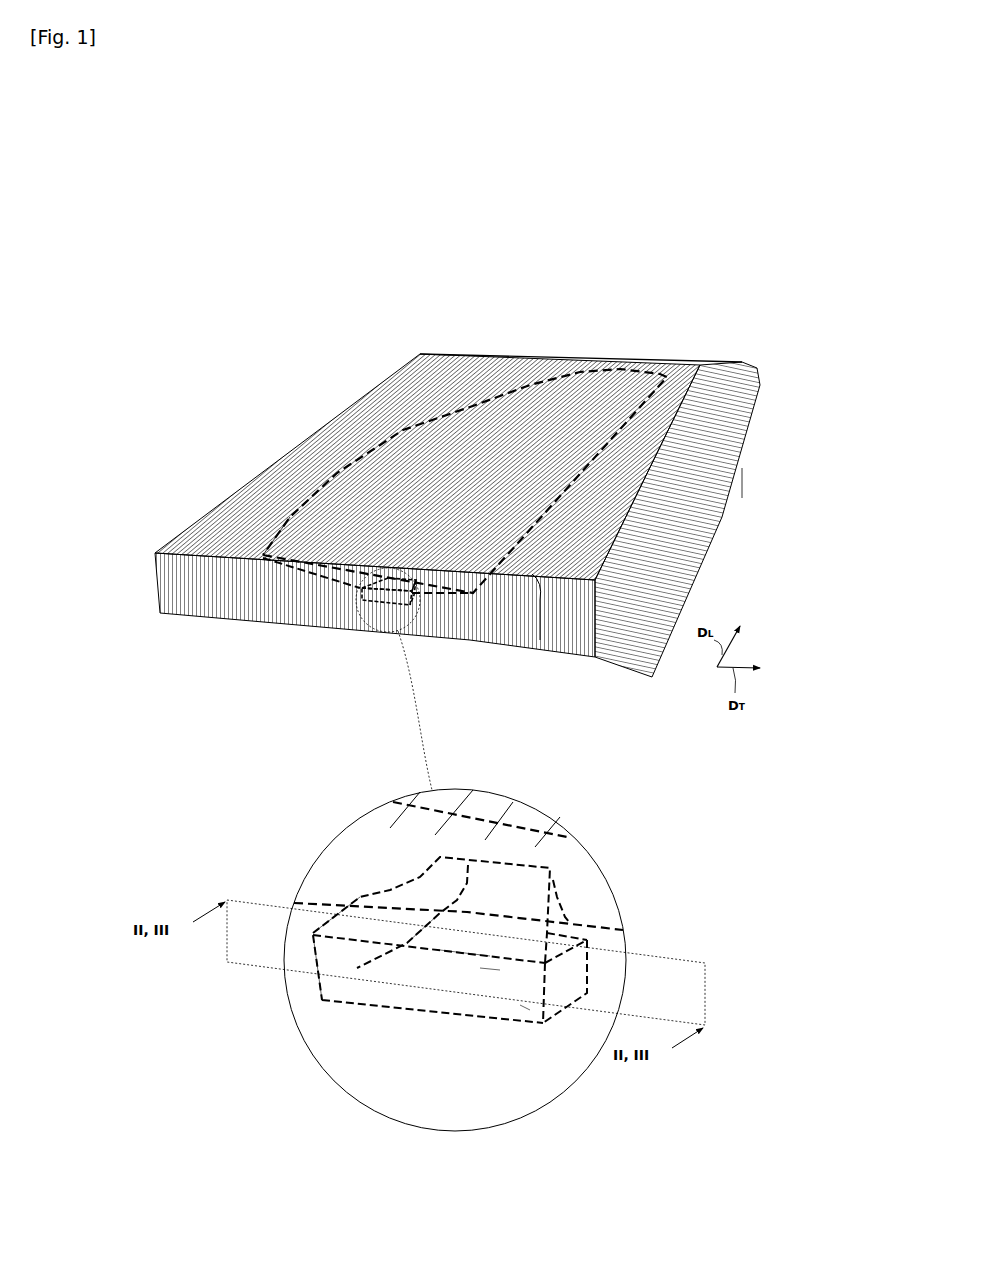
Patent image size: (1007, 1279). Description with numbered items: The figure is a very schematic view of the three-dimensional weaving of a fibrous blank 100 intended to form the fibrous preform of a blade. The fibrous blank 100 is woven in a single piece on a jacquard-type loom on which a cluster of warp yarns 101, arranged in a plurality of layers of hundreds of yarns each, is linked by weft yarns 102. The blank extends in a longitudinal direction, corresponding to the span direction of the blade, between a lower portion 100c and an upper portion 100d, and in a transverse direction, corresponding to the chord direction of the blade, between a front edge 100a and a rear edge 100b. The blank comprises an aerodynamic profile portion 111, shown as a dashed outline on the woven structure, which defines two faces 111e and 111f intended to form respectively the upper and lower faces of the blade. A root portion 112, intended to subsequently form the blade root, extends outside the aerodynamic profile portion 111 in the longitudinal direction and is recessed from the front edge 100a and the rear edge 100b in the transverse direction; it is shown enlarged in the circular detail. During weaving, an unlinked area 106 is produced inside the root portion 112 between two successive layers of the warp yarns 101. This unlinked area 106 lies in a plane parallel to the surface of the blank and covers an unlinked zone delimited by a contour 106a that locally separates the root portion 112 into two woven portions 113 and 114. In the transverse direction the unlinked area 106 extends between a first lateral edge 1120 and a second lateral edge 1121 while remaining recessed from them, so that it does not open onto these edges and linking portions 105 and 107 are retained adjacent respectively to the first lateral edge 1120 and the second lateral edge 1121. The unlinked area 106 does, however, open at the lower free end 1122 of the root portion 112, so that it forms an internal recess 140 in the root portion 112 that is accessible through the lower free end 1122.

The fibrous blank 100 is at (483, 477).
The front edge 100a is at (392, 372).
The rear edge 100b is at (758, 444).
The lower portion 100c is at (384, 626).
The upper portion 100d is at (602, 358).
The warp yarns 101 is at (550, 633).
The weft yarns 102 is at (742, 498).
The linking portion 105 is at (290, 948).
The unlinked area 106 is at (410, 960).
The internal recess 140 is at (412, 956).
The contour 106a is at (450, 983).
The linking portion 107 is at (522, 1008).
The aerodynamic profile portion 111 is at (515, 424).
The face 111e is at (297, 440).
The face 111f is at (436, 638).
The root portion 112 is at (340, 612).
The first lateral edge 1120 is at (308, 962).
The second lateral edge 1121 is at (547, 997).
The lower free end 1122 is at (338, 1005).
The woven portion 113 is at (485, 973).
The woven portion 114 is at (467, 1003).